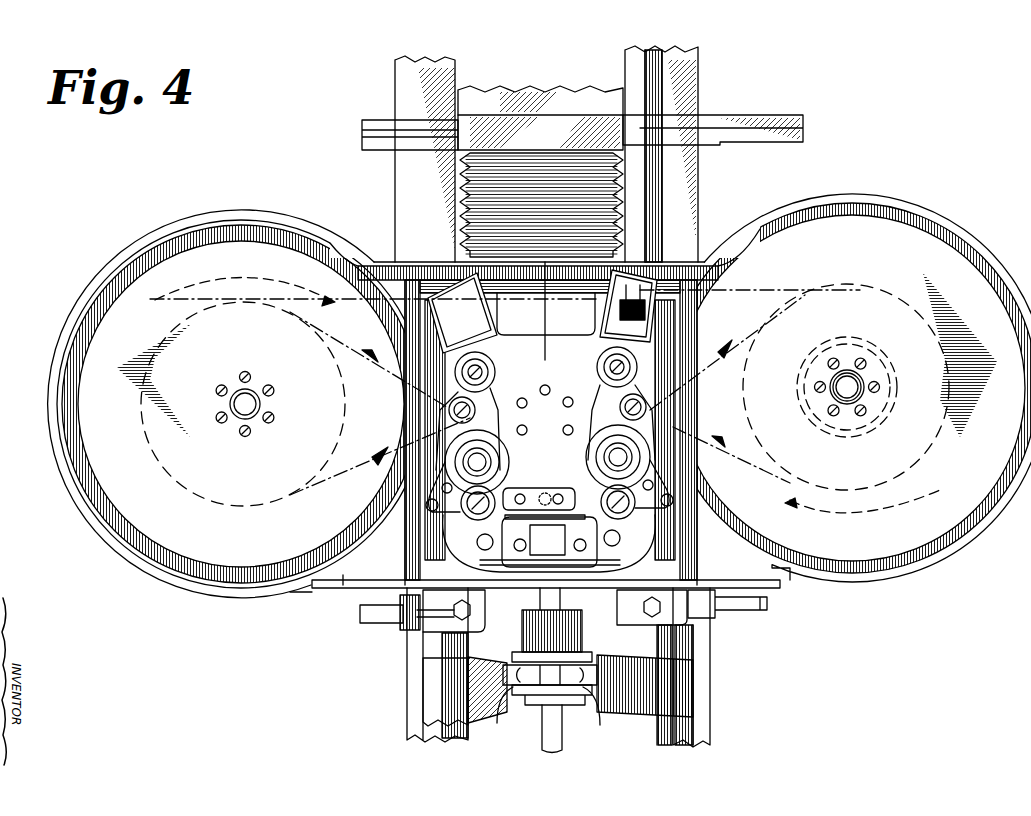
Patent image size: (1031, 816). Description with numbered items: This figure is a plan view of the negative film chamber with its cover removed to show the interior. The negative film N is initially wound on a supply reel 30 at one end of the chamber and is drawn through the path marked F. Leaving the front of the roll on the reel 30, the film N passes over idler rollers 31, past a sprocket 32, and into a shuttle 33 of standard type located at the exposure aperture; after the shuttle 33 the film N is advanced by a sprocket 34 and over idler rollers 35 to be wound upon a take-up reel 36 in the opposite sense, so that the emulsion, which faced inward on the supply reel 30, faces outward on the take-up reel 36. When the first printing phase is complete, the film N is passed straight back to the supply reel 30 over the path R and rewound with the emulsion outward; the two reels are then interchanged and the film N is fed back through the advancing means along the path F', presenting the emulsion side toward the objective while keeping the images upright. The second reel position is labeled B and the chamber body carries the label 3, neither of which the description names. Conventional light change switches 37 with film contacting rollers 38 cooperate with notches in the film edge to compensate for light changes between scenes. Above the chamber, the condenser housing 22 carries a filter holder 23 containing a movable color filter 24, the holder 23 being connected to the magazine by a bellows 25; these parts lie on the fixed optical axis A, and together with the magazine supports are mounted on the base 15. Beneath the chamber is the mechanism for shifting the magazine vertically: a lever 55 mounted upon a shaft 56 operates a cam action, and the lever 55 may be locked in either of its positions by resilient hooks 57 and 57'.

The camera housing 3 is at (539, 401).
The base 15 is at (700, 190).
The condenser housing 22 is at (568, 100).
The filter holder 23 is at (540, 132).
The movable color filter 24 is at (769, 128).
The bellows 25 is at (460, 205).
The supply reel 30 is at (879, 374).
The idler rollers 31 is at (640, 388).
The sprocket 32 is at (673, 485).
The shuttle 33 is at (658, 562).
The sprocket 34 is at (443, 465).
The idler rollers 35 is at (455, 378).
The take-up reel 36 is at (231, 348).
The light change switches 37 is at (440, 298).
The film contacting rollers 38 is at (600, 343).
The lever 55 is at (478, 612).
The shaft 56 is at (566, 740).
The resilient hook 57 is at (381, 630).
The resilient hook 57' is at (731, 617).
The optical axis A is at (245, 390).
The reel B hub B is at (847, 372).
The film path F is at (470, 391).
The film path F' is at (547, 398).
The negative film N is at (768, 470).
The rewind path R is at (790, 290).